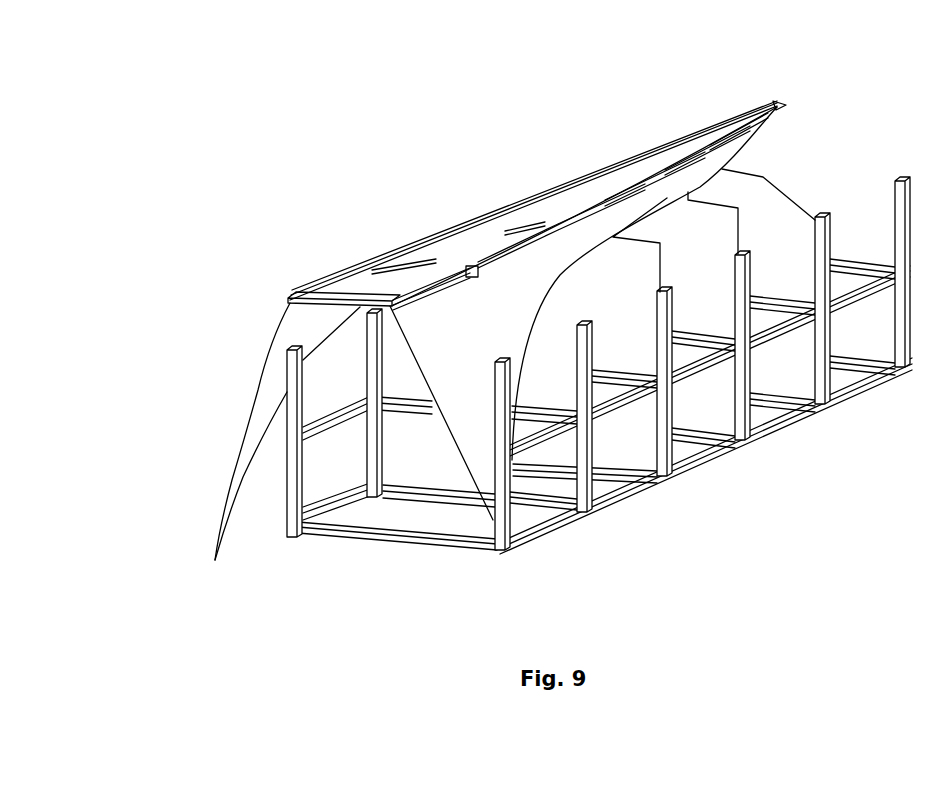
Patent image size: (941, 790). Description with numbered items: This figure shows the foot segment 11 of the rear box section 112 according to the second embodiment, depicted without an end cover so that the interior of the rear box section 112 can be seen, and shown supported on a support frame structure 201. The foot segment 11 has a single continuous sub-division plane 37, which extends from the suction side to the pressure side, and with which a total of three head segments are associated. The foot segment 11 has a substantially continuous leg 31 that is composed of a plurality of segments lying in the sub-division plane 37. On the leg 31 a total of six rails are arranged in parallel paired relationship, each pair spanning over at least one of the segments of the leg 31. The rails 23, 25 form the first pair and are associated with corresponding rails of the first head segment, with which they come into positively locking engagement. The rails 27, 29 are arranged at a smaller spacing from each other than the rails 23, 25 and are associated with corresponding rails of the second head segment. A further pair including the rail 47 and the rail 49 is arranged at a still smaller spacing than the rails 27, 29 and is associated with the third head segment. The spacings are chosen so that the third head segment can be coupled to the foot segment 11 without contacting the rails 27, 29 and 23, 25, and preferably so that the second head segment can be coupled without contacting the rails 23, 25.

The rear box section 112 is at (515, 179).
The rail 23 is at (348, 282).
The rail 25 is at (424, 282).
The rail 27 is at (517, 207).
The rail 29 is at (562, 206).
The leg 31 is at (457, 243).
The rail 47 is at (662, 152).
The rail end segment 49 is at (698, 133).
The sub-division plane 37 is at (252, 321).
The foot segment 11 is at (462, 413).
The support frame structure 201 is at (712, 490).